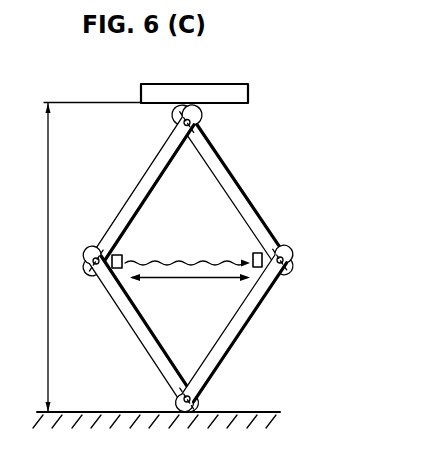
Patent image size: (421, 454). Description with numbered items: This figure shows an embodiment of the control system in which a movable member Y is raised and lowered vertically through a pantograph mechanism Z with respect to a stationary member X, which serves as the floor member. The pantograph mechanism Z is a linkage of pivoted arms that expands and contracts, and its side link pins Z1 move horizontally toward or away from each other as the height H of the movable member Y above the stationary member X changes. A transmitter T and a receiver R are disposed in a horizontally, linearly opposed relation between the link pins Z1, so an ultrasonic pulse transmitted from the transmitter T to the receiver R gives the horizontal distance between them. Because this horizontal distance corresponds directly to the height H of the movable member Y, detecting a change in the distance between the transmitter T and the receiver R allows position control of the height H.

The movable member Y is at (236, 95).
The stationary member X is at (247, 421).
The height H is at (83, 258).
The pantograph mechanism Z is at (243, 318).
The link pin Z1 is at (327, 238).
The transmitter T is at (110, 272).
The receiver R is at (260, 257).